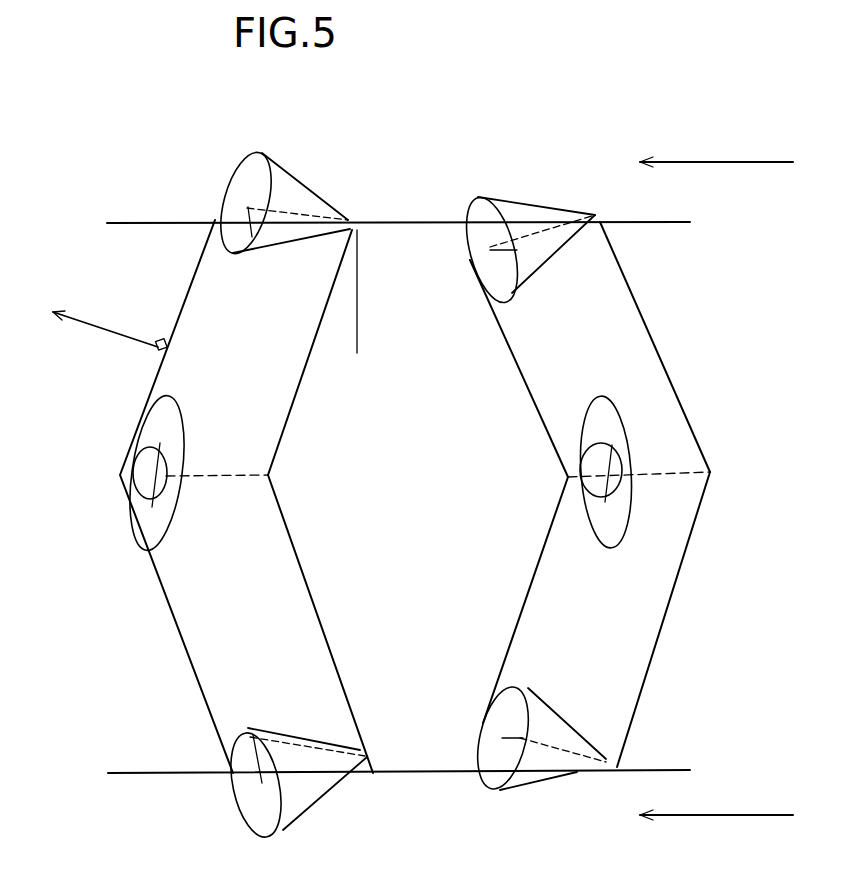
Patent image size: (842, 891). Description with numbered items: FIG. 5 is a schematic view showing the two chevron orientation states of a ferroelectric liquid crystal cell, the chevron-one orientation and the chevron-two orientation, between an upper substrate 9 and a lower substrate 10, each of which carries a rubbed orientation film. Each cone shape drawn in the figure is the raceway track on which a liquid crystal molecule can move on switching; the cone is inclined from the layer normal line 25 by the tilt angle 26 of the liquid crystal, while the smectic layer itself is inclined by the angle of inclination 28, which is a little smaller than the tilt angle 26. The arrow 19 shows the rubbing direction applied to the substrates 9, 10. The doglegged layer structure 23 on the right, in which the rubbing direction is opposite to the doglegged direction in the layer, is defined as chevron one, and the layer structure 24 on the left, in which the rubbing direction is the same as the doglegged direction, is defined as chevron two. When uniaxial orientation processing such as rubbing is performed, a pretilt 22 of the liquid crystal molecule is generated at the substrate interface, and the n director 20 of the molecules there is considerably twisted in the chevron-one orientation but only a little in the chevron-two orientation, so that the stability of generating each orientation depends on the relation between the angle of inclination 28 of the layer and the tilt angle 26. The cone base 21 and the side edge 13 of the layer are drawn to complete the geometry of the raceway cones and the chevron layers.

The substrate 9 is at (152, 222).
The substrate 10 is at (185, 775).
The side edge of cone C1 development 13 is at (630, 323).
The arrow 19 is at (678, 162).
The n director 20 is at (565, 752).
The base of lower right cone 21 is at (503, 765).
The pretilt 22 is at (528, 242).
The layer structure 23 is at (590, 547).
The layer structure 24 is at (265, 567).
The layer normal line 25 is at (89, 322).
The tilt angle 26 is at (305, 218).
The angle of inclination of the layer 28 is at (357, 285).